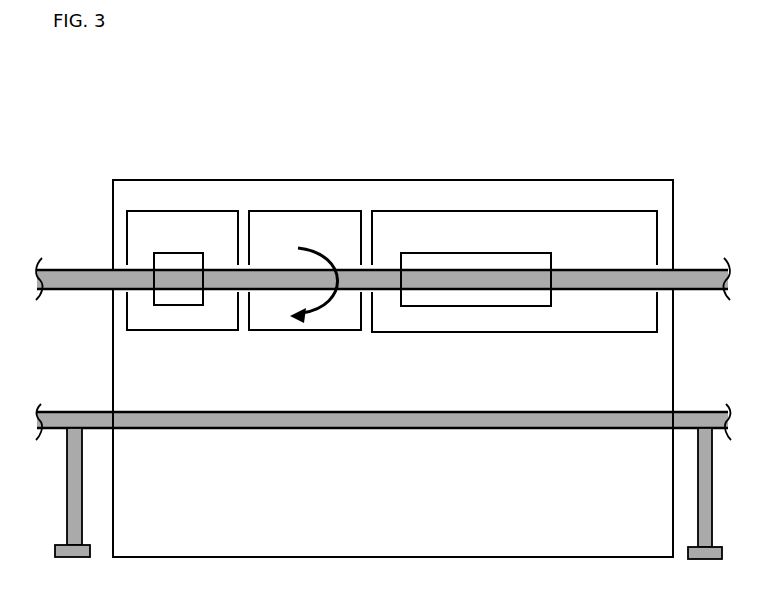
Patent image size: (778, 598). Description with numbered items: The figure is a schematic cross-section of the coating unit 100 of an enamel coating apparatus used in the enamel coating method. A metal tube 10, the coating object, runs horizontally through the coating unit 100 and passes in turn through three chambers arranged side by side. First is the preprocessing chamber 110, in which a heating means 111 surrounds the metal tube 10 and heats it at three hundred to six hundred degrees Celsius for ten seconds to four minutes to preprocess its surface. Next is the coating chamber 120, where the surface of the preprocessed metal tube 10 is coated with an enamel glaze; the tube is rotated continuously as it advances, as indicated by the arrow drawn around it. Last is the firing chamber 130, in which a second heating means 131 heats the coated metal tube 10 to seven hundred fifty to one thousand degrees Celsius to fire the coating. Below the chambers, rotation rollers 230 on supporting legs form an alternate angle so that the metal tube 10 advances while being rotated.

The coating unit 100 is at (402, 109).
The metal tube 10 is at (69, 290).
The preprocessing chamber 110 is at (176, 210).
The heating means 111 is at (176, 307).
The coating chamber 120 is at (307, 210).
The firing chamber 130 is at (513, 210).
The heating means 131 is at (467, 307).
The rotation rollers 230 is at (70, 411).